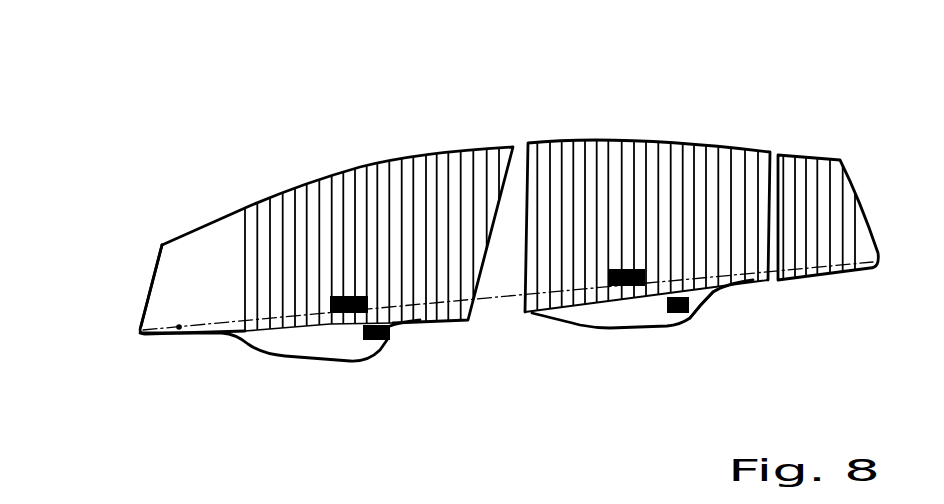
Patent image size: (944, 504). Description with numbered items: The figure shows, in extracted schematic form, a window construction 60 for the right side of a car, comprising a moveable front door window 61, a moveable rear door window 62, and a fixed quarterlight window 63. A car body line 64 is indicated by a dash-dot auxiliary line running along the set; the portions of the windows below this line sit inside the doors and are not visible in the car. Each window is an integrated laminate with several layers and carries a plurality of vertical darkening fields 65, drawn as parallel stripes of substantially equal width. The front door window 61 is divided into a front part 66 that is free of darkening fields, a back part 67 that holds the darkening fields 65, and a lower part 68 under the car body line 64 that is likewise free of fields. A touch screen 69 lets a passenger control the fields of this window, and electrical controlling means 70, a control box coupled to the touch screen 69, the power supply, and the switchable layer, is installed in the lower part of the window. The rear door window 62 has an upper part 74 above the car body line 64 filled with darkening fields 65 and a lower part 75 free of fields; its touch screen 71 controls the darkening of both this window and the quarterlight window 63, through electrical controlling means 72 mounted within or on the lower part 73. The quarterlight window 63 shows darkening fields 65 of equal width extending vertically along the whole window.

The window construction 60 is at (370, 150).
The front door window 61 is at (185, 253).
The rear door window 62 is at (620, 150).
The quarterlight window 63 is at (833, 158).
The car body line 64 is at (179, 327).
The darkening fields 65 is at (418, 157).
The front part 66 is at (167, 293).
The back part 67 is at (325, 200).
The lower part 68 is at (268, 340).
The touch screen 69 is at (350, 313).
The electrical controlling means 70 is at (383, 340).
The touch screen 71 is at (627, 286).
The electrical controlling means 72 is at (678, 313).
The lower part 73 is at (688, 320).
The upper part 74 is at (705, 163).
The lower part 75 is at (602, 316).